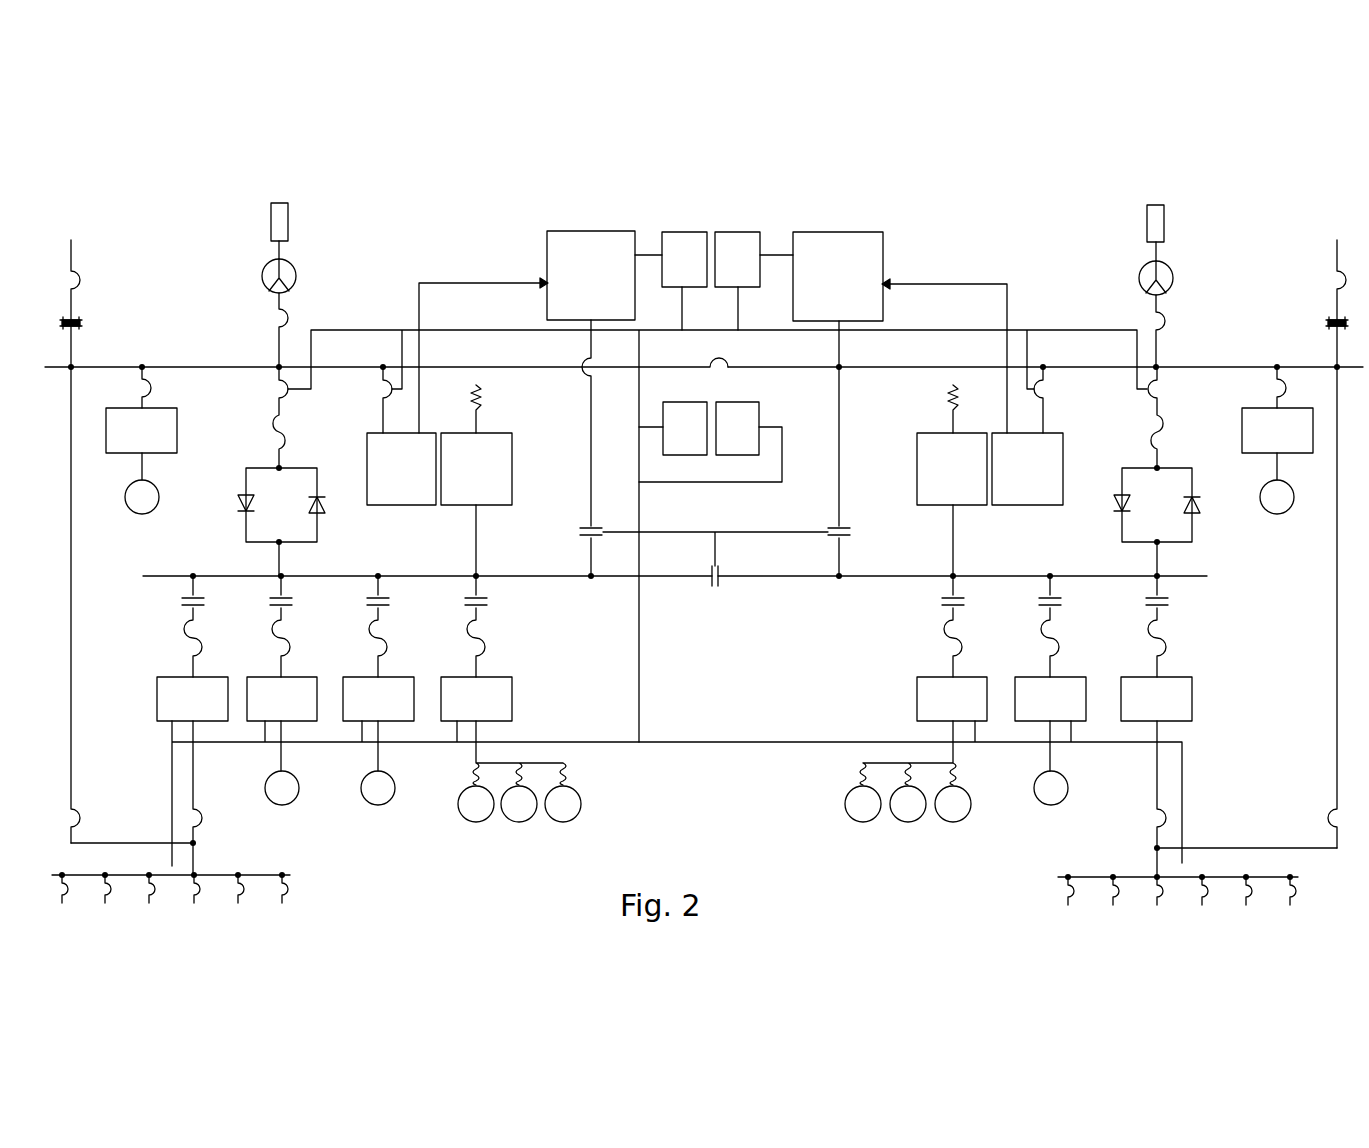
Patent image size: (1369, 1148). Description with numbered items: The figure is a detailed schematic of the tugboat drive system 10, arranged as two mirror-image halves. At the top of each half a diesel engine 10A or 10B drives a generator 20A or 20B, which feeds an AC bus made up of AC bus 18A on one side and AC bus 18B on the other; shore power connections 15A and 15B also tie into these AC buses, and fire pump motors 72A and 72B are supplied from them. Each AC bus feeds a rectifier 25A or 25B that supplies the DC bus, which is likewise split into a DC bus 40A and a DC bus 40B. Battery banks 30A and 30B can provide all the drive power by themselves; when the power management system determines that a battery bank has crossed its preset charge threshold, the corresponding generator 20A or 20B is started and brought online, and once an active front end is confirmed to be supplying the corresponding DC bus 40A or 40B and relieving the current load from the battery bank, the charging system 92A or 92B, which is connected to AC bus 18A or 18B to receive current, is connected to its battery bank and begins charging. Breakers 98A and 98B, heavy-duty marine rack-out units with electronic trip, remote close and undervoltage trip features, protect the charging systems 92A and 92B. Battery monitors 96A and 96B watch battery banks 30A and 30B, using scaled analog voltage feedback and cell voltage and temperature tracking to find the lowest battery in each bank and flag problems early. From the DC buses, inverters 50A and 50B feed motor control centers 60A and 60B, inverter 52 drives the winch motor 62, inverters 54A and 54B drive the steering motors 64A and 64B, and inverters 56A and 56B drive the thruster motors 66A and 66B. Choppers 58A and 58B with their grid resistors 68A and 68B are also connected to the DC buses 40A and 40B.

The drive system 10 is at (436, 206).
The diesel engine 10A is at (270, 223).
The diesel engine 10B is at (1146, 225).
The shore power connection 15A is at (80, 281).
The shore power connection 15B is at (1328, 287).
The AC bus 18A is at (198, 365).
The AC bus 18B is at (1230, 366).
The generator 20A is at (262, 277).
The generator 20B is at (1139, 279).
The rectifier 25A is at (246, 479).
The rectifier 25B is at (1198, 460).
The battery bank 30A is at (546, 258).
The battery bank 30B is at (884, 254).
The DC bus 40A is at (537, 578).
The DC bus 40B is at (775, 578).
The inverter 50A is at (175, 677).
The inverter 50B is at (1136, 677).
The inverter 52 is at (260, 677).
The inverter 54A is at (462, 677).
The inverter 54B is at (932, 677).
The inverter 56A is at (362, 677).
The inverter 56B is at (1032, 677).
The chopper 58A is at (512, 462).
The chopper 58B is at (917, 461).
The motor control center 60A is at (223, 874).
The motor control center 60B is at (1094, 876).
The winch motor 62 is at (283, 806).
The steering motors 64A is at (556, 765).
The steering motors 64B is at (866, 765).
The thruster motor 66A is at (379, 806).
The thruster motor 66B is at (1052, 806).
The grid resistor 68A is at (481, 396).
The grid resistor 68B is at (947, 393).
The fire pump motor 72A is at (139, 514).
The fire pump motor 72B is at (1275, 514).
The charging system 92A is at (367, 455).
The charging system 92B is at (1063, 457).
The battery monitor 96A is at (676, 232).
The battery monitor 96B is at (746, 232).
The breaker 98A is at (384, 384).
The breaker 98B is at (1050, 392).